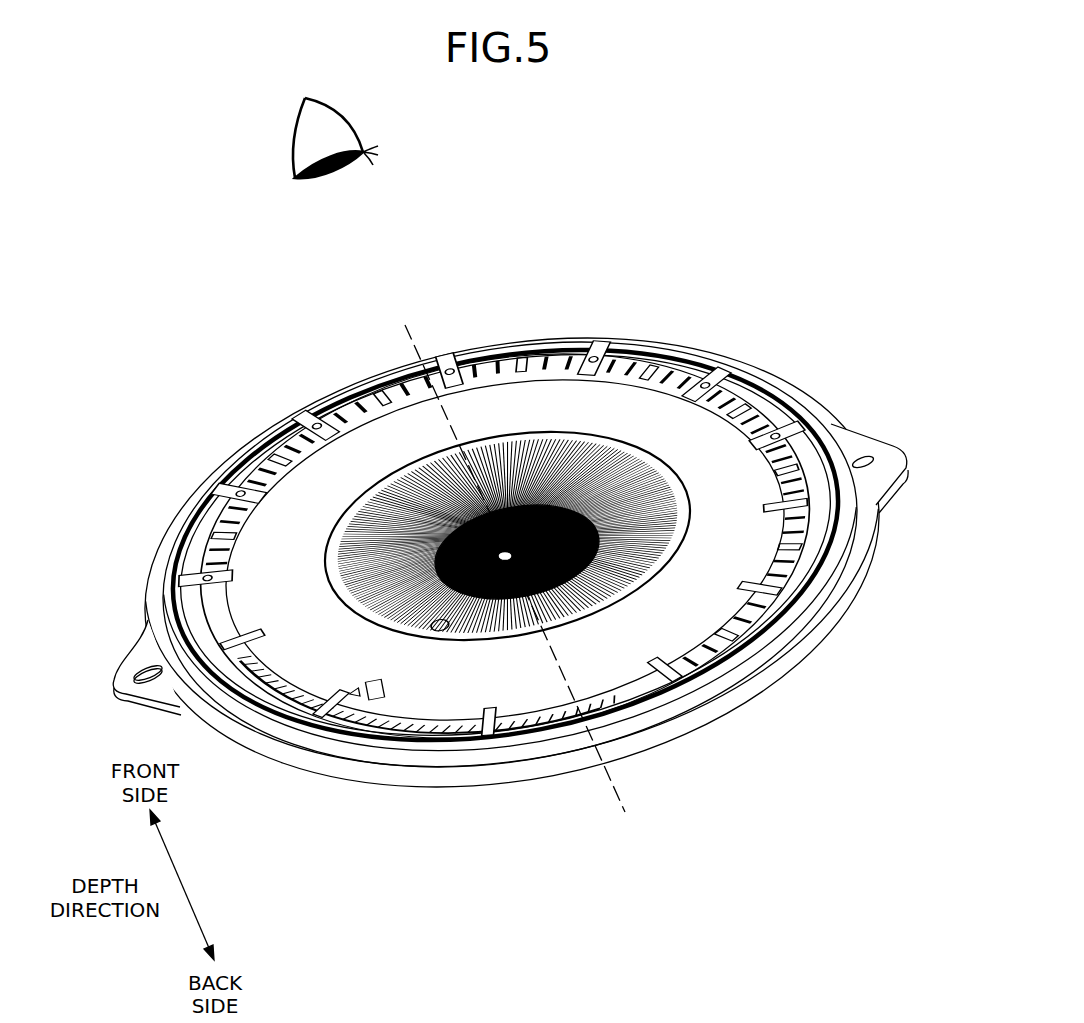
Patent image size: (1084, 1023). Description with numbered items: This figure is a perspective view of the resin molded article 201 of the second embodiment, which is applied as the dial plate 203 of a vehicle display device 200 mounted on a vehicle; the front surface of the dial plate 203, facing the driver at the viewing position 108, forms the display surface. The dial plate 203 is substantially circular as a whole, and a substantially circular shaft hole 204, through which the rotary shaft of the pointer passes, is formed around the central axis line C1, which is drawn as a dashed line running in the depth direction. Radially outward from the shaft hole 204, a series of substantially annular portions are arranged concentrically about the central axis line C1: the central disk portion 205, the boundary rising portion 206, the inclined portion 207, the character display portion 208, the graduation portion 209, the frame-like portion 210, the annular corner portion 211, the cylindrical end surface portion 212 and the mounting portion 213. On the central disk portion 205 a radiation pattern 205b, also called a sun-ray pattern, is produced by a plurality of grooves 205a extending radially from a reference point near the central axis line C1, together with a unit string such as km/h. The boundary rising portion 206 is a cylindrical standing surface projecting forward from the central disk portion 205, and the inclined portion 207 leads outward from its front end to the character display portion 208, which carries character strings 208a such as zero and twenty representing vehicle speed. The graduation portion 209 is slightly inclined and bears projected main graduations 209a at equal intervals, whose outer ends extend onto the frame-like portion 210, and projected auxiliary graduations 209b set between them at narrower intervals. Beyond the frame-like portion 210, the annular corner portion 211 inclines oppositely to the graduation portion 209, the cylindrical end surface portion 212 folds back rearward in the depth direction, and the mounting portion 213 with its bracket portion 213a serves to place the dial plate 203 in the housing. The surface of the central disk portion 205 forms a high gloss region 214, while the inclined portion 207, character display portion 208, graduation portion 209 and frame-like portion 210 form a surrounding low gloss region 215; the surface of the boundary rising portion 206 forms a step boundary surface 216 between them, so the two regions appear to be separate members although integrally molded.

The viewing position 108 is at (292, 140).
The vehicle display device 200 is at (513, 547).
The resin molded article 201 is at (513, 547).
The dial plate 203 is at (330, 237).
The shaft hole 204 is at (500, 573).
The central disk portion 205 is at (517, 552).
The grooves 205a is at (586, 521).
The radiation pattern 205b is at (586, 521).
The boundary rising portion 206 is at (505, 546).
The inclined portion 207 is at (507, 536).
The character display portion 208 is at (640, 405).
The character strings 208a is at (745, 450).
The graduation portion 209 is at (512, 536).
The main graduations 209a is at (238, 493).
The auxiliary graduations 209b is at (206, 578).
The frame-like portion 210 is at (777, 403).
The annular corner portion 211 is at (837, 543).
The cylindrical end surface portion 212 is at (842, 567).
The mounting portion 213 is at (847, 593).
The bracket portion 213a is at (133, 660).
The high gloss region 214 is at (429, 550).
The low gloss region 215 is at (316, 425).
The step boundary surface 216 is at (505, 546).
The central axis line C1 is at (628, 798).